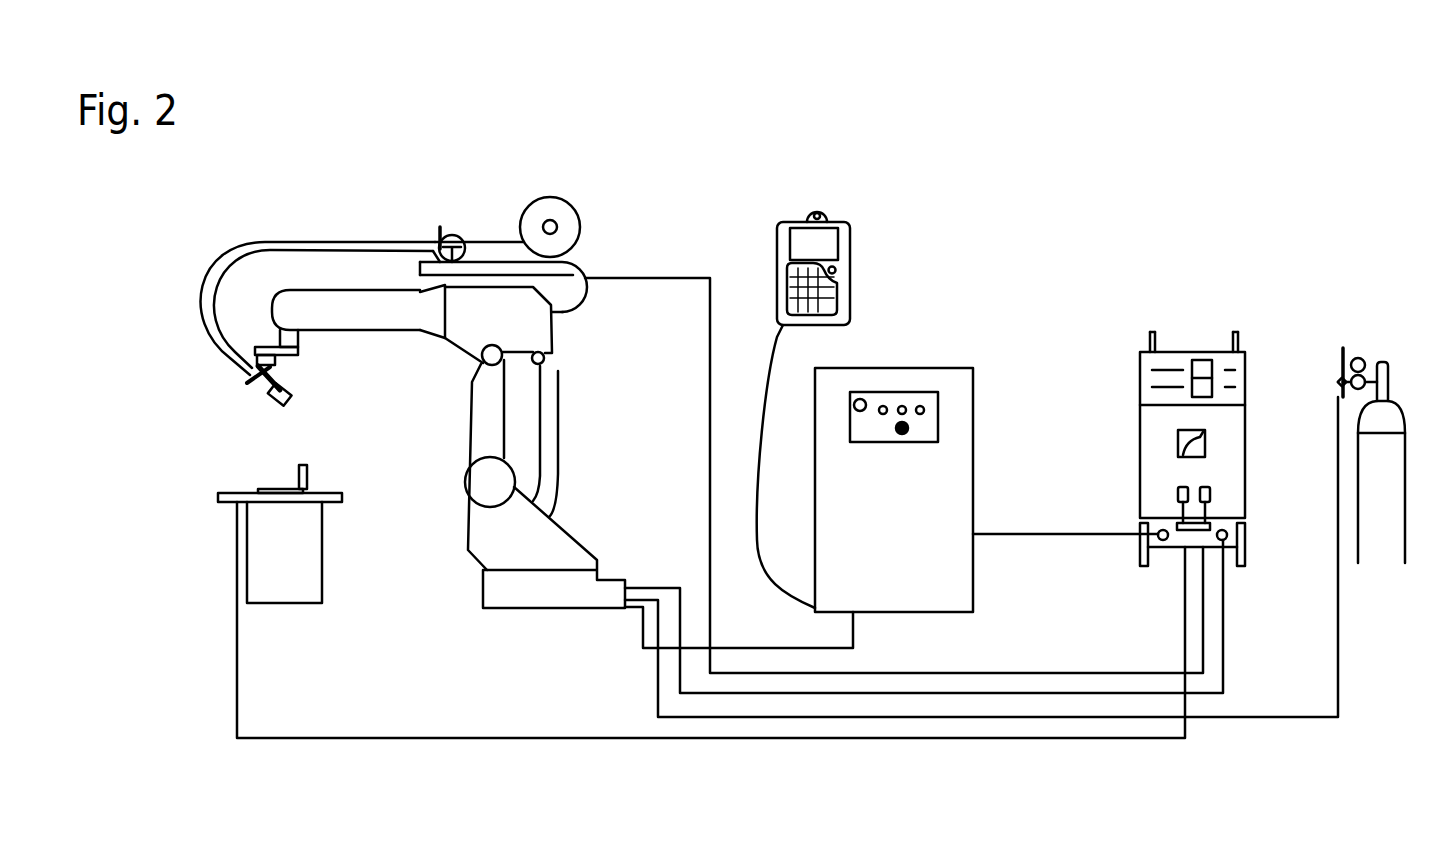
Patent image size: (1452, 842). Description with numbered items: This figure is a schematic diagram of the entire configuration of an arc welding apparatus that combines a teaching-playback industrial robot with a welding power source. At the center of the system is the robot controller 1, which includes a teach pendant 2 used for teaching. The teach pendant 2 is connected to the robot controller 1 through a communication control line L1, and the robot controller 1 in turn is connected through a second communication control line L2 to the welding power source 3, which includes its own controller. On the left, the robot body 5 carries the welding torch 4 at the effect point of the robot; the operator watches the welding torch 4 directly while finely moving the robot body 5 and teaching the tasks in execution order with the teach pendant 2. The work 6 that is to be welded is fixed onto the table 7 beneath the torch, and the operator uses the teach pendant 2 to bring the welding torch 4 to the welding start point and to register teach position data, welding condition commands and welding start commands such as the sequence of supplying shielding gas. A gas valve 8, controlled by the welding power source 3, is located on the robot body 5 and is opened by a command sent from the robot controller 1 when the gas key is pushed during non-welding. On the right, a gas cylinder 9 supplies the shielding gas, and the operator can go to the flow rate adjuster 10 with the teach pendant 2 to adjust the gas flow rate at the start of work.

The robot controller 1 is at (937, 368).
The teach pendant 2 is at (850, 250).
The welding power source 3 is at (1245, 443).
The welding torch 4 is at (255, 390).
The robot body 5 is at (553, 334).
The work 6 is at (308, 467).
The table 7 is at (342, 497).
The gas valve 8 is at (455, 236).
The gas cylinder 9 is at (1392, 417).
The flow rate adjuster 10 is at (1357, 353).
The communication control line L1 is at (760, 565).
The communication control line L2 is at (1023, 532).